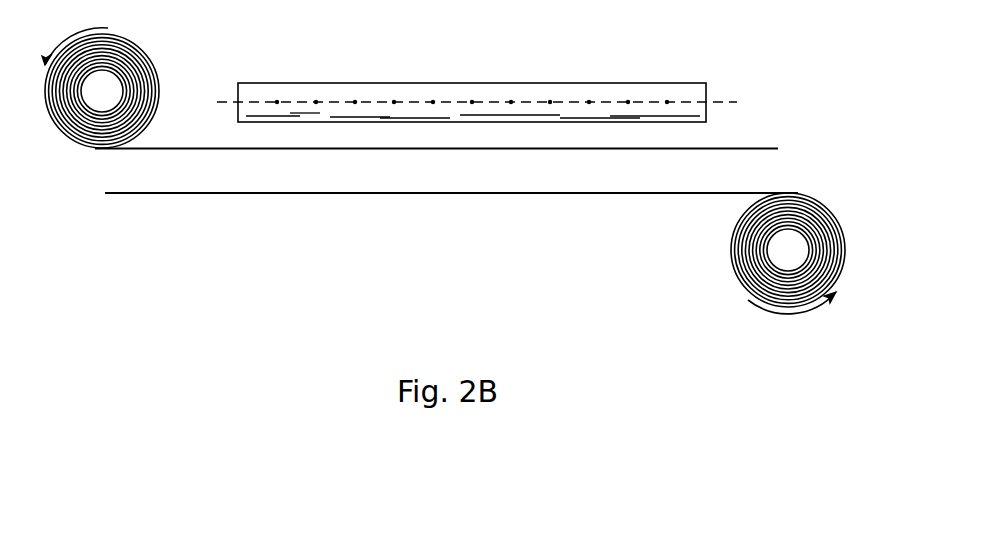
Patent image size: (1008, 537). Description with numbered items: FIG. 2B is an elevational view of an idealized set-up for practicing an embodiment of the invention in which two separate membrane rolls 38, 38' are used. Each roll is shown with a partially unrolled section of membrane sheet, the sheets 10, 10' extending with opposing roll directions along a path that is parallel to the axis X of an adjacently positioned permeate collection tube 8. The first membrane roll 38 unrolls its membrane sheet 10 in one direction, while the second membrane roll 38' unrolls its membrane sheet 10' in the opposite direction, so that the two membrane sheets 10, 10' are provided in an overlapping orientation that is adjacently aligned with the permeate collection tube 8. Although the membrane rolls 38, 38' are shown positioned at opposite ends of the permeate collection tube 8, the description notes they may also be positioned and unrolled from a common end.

The membrane roll 38 is at (122, 86).
The membrane roll 38' is at (758, 253).
The membrane sheet 10 is at (459, 131).
The membrane sheet 10' is at (441, 217).
The permeate collection tube 8 is at (460, 82).
The axis X is at (725, 102).